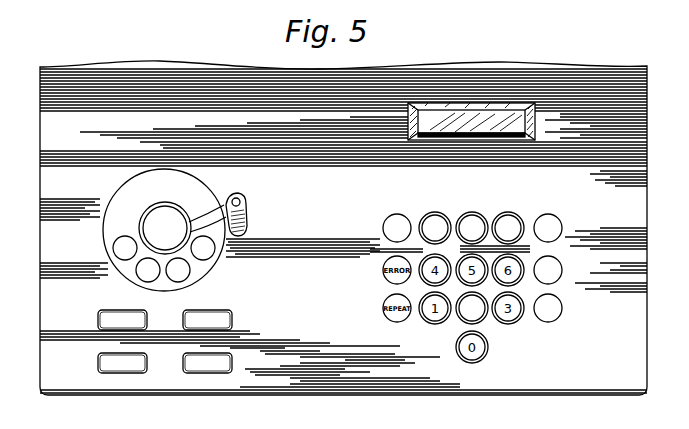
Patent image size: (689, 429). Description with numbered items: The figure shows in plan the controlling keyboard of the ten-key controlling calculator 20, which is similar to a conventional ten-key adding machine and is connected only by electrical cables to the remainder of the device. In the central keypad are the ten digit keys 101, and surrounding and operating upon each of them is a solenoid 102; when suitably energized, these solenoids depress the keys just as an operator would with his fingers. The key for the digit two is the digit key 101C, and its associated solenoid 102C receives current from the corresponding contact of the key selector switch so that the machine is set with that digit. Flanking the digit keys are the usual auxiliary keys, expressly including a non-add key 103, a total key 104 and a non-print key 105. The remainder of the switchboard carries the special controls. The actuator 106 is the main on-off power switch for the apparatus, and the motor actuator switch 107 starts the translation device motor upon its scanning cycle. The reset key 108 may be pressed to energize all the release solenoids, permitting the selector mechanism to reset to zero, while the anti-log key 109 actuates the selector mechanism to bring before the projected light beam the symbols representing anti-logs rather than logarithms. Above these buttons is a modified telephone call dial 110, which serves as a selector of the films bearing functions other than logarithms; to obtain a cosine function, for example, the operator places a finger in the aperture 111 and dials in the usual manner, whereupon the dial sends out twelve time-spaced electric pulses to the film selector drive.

The ten-key controlling calculator 20 is at (328, 378).
The digit keys 101 is at (480, 211).
The digit key 101C is at (464, 317).
The solenoid 102 is at (430, 214).
The solenoid 102C is at (463, 320).
The non-add key 103 is at (562, 262).
The total key 104 is at (562, 308).
The non-print key 105 is at (383, 226).
The actuator 106 is at (98, 313).
The motor actuator switch 107 is at (98, 362).
The reset key 108 is at (232, 356).
The anti-log key 109 is at (232, 313).
The modified telephone call dial 110 is at (130, 190).
The aperture 111 is at (113, 246).